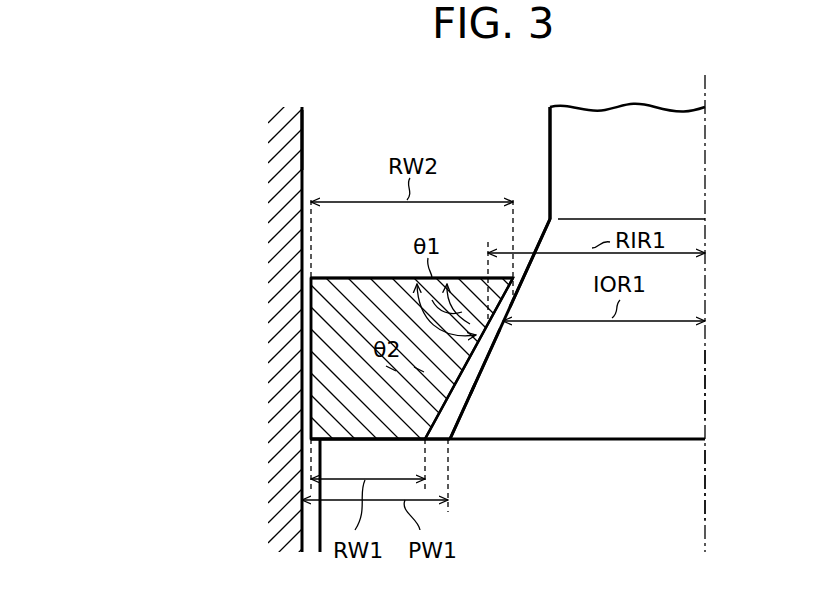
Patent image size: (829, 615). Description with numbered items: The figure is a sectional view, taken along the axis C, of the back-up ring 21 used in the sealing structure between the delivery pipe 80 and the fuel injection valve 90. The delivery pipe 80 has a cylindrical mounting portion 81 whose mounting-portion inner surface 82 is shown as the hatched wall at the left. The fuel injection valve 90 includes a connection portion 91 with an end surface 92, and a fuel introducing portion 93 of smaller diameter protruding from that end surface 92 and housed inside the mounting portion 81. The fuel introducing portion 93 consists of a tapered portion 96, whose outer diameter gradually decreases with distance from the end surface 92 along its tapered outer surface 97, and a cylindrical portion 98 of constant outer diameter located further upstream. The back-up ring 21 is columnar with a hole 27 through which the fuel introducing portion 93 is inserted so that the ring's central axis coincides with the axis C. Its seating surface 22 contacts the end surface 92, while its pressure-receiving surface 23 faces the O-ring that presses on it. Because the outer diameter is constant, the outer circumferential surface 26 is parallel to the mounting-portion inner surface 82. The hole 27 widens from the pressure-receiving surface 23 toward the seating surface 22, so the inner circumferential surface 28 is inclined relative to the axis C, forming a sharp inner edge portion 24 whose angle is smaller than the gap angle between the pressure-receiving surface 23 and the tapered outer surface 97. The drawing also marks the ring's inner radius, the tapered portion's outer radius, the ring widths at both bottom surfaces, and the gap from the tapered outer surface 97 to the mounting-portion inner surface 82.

The delivery pipe 80 is at (323, 113).
The mounting portion 81 is at (290, 126).
The mounting-portion inner surface 82 is at (290, 151).
The back-up ring 21 is at (315, 358).
The seating surface 22 is at (315, 452).
The pressure-receiving surface 23 is at (396, 277).
The inner edge portion 24 is at (484, 277).
The outer circumferential surface 26 is at (304, 330).
The hole 27 is at (513, 303).
The inner circumferential surface 28 is at (437, 422).
The fuel injection valve 90 is at (644, 506).
The connection portion 91 is at (690, 480).
The end surface 92 is at (362, 439).
The fuel introducing portion 93 is at (536, 167).
The tapered portion 96 is at (690, 388).
The tapered outer surface 97 is at (460, 380).
The cylindrical portion 98 is at (690, 172).
The axis C is at (705, 83).